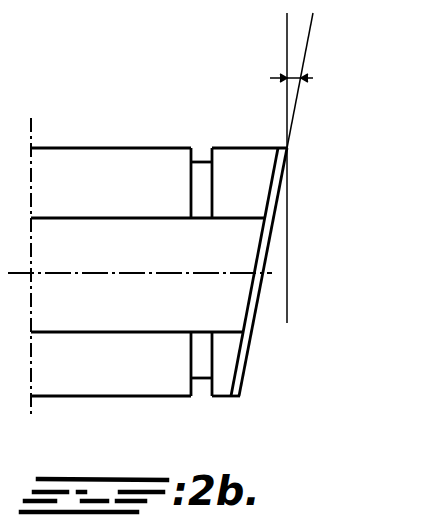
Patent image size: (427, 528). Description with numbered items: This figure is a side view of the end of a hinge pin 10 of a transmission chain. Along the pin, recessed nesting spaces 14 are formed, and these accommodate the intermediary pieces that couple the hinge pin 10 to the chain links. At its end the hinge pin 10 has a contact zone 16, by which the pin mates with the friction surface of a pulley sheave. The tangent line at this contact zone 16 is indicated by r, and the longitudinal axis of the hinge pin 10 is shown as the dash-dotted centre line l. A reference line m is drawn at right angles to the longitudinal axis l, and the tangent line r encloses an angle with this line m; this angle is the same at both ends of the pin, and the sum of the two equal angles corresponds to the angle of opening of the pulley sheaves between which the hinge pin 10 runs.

The hinge pin 10 is at (143, 162).
The nesting space 14 is at (240, 236).
The contact zone 16 is at (262, 293).
The longitudinal axis l is at (158, 272).
The line at right angles to the longitudinal axis m is at (285, 52).
The tangent line r is at (307, 56).